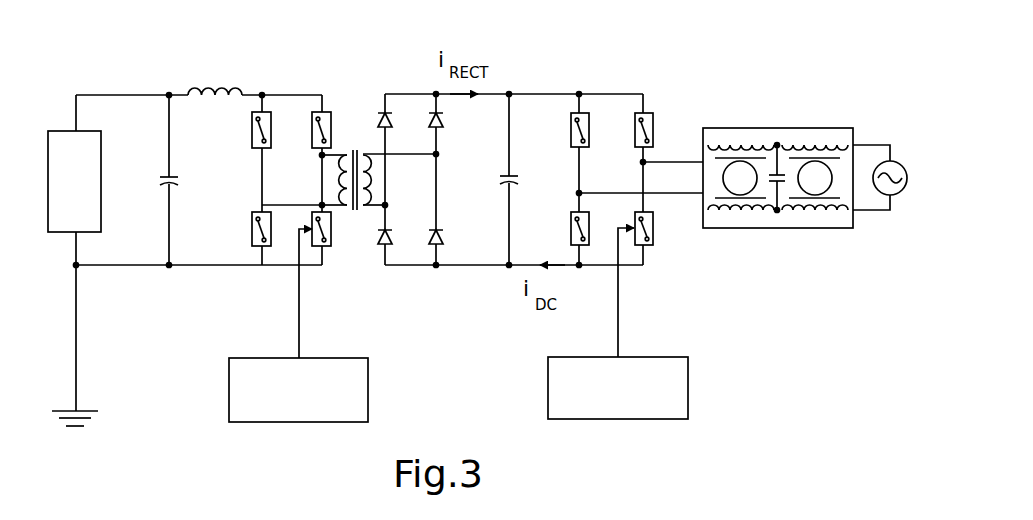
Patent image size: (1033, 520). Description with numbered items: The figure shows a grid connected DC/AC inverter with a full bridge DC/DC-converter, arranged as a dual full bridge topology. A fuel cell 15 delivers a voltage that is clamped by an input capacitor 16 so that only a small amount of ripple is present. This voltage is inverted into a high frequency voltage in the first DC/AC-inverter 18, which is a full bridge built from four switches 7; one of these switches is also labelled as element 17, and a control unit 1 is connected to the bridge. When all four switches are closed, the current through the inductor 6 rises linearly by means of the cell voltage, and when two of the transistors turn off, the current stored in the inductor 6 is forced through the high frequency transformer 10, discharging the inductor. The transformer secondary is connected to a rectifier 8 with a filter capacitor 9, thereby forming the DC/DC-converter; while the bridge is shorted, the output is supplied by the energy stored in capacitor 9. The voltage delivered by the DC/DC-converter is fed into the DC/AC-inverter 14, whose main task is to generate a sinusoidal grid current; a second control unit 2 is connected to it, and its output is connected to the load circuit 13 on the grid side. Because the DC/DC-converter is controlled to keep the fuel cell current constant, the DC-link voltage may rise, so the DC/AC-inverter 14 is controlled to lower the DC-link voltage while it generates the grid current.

The first control unit 1 is at (288, 402).
The second control unit 2 is at (607, 401).
The inductor 6 is at (217, 83).
The switches 7 is at (331, 247).
The rectifier 8 is at (418, 275).
The filter capacitor 9 is at (507, 190).
The high frequency transformer 10 is at (355, 143).
The load circuit 13 is at (793, 128).
The DC/AC-inverter 14 is at (618, 139).
The fuel cell 15 is at (66, 234).
The input capacitor 16 is at (165, 192).
The switch Q2 17 is at (653, 114).
The first DC/AC-inverter 18 is at (287, 182).